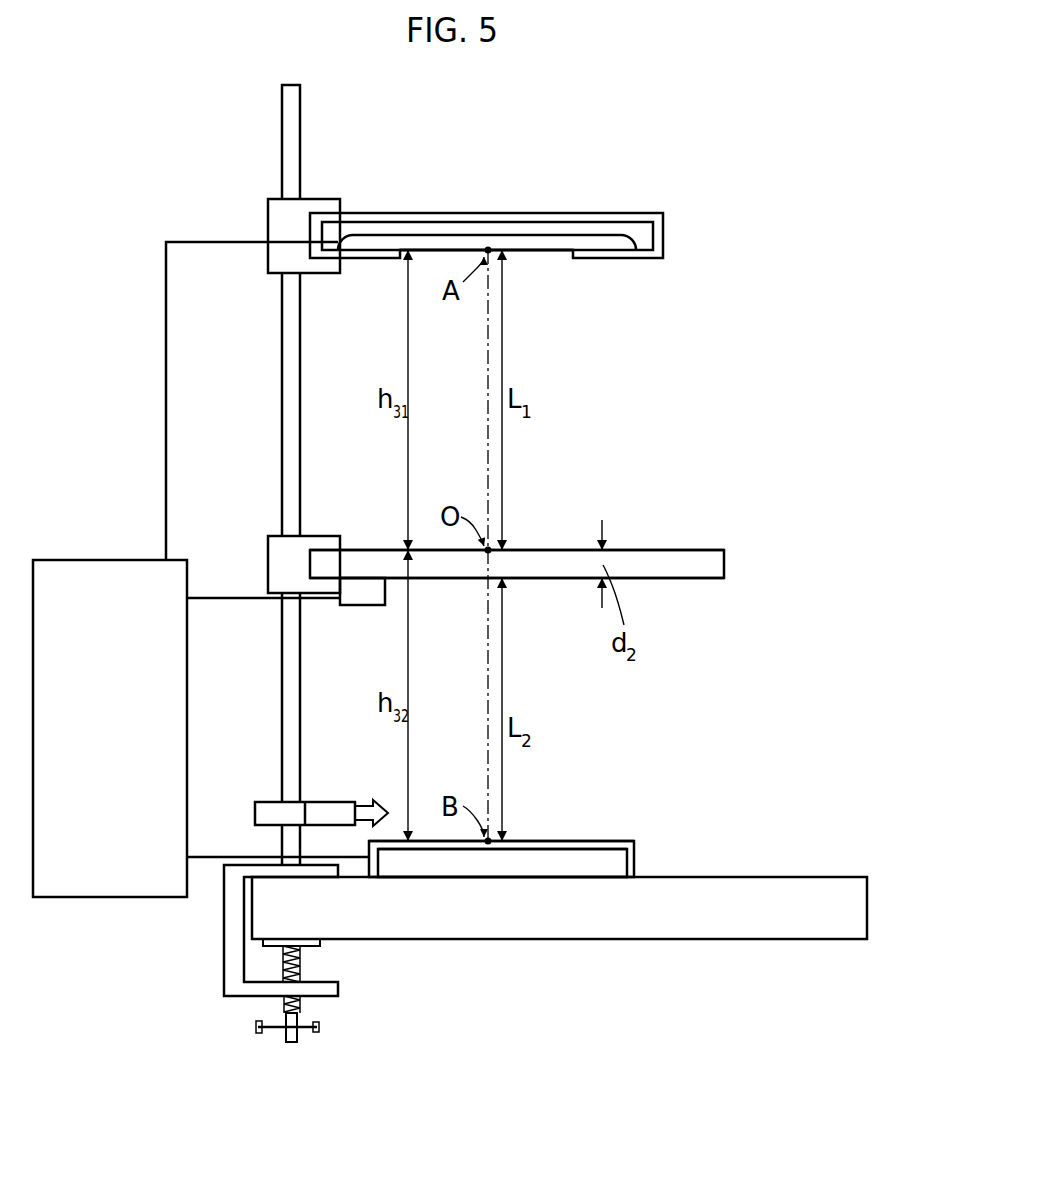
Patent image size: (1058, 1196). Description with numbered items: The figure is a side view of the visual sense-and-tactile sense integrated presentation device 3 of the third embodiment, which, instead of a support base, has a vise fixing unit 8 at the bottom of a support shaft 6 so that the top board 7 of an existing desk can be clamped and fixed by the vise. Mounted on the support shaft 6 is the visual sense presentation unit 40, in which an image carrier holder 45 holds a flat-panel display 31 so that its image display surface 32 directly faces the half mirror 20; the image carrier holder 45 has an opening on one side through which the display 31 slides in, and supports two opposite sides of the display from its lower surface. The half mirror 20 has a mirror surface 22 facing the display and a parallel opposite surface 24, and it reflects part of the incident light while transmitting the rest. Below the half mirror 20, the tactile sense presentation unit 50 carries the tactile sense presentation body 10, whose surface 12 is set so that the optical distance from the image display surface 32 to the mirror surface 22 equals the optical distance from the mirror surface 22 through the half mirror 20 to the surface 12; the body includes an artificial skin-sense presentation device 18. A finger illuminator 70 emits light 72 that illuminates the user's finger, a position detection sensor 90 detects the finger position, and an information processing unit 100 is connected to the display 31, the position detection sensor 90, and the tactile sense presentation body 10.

The visual sense-and-tactile sense integrated presentation device 3 is at (163, 234).
The support shaft 6 is at (282, 127).
The top board 7 is at (868, 903).
The vise fixing unit 8 is at (224, 955).
The tactile sense presentation body 10 is at (637, 849).
The surface of tactile sense presentation body 12 is at (601, 841).
The artificial skin-sense presentation device 18 is at (543, 853).
The half mirror 20 is at (724, 563).
The mirror surface 22 is at (652, 549).
The opposite surface 24 is at (652, 580).
The flat-panel display 31 is at (553, 244).
The image display surface 32 is at (522, 252).
The visual sense presentation unit 40 is at (678, 218).
The image carrier holder 45 is at (620, 213).
The tactile sense presentation unit 50 is at (692, 852).
The finger illuminator 70 is at (322, 800).
The light 72 is at (365, 800).
The position detection sensor 90 is at (355, 607).
The information processing unit 100 is at (72, 558).